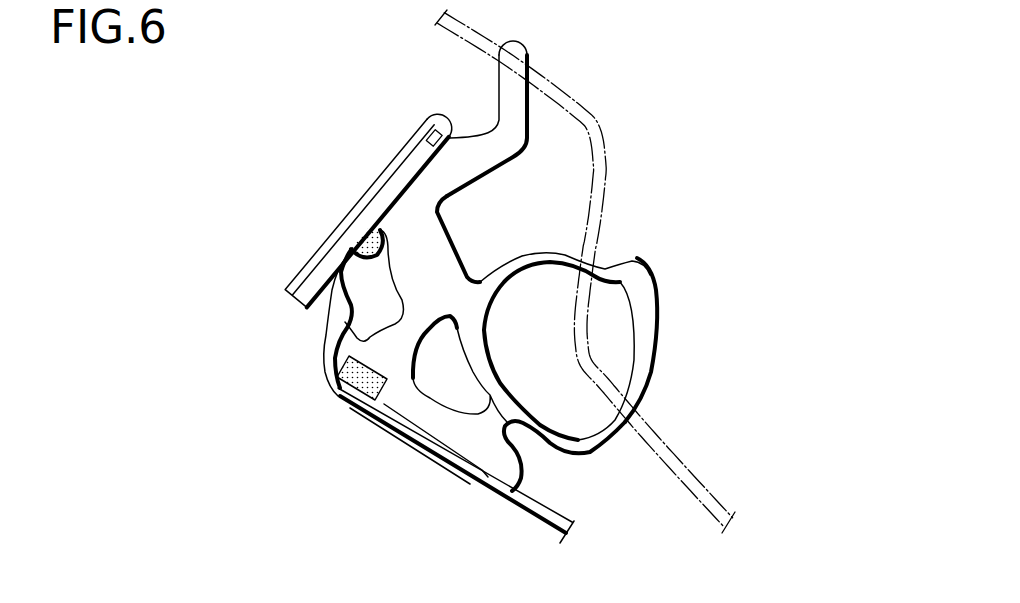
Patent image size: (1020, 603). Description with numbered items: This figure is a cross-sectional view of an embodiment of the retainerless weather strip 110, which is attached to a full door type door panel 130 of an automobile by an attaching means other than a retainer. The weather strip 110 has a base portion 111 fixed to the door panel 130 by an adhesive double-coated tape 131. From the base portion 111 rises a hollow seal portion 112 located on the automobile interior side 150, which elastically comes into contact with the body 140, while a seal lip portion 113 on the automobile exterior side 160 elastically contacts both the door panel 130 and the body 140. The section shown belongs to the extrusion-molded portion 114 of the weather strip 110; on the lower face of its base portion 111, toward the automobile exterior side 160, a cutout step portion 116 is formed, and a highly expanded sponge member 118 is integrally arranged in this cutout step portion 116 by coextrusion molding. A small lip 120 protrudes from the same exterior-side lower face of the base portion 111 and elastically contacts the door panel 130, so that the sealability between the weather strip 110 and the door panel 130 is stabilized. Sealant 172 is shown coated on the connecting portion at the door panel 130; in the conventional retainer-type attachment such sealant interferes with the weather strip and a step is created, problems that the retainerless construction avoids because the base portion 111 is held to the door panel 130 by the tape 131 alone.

The retainerless weather strip 110 is at (629, 343).
The extrusion-molded portion 114 is at (670, 289).
The base portion 111 is at (473, 447).
The hollow seal portion 112 is at (645, 367).
The seal lip portion 113 is at (502, 90).
The cutout step portion 116 is at (340, 345).
The highly expanded sponge member 118 is at (337, 378).
The small lip 120 is at (345, 326).
The door panel 130 is at (393, 182).
The adhesive double-coated tape 131 is at (423, 435).
The body 140 is at (591, 127).
The automobile interior side 150 is at (852, 431).
The automobile exterior side 160 is at (157, 431).
The sealant 172 is at (358, 243).